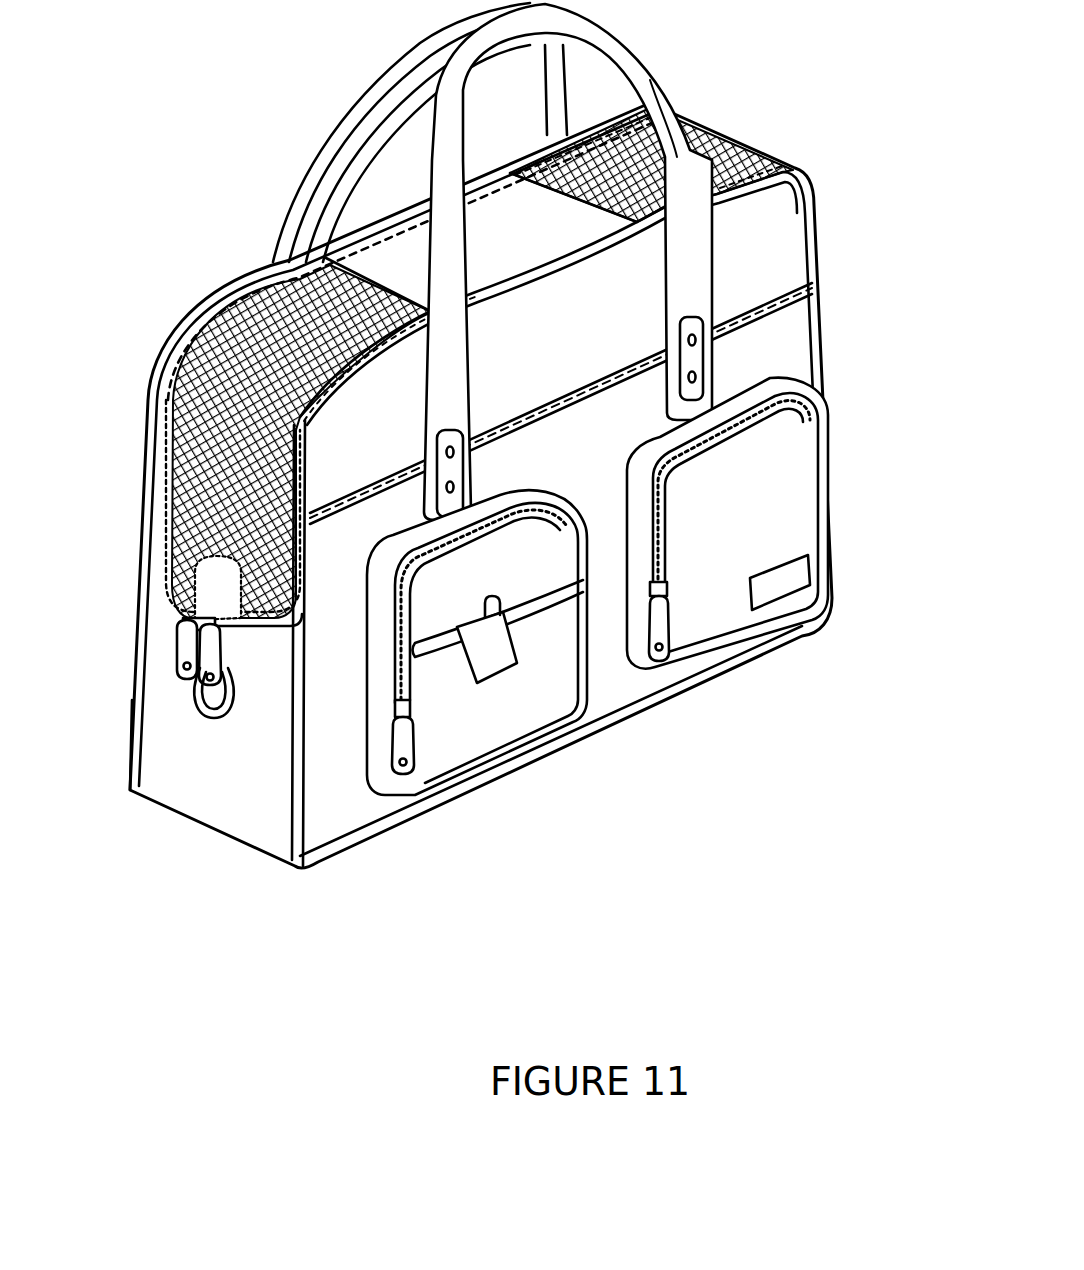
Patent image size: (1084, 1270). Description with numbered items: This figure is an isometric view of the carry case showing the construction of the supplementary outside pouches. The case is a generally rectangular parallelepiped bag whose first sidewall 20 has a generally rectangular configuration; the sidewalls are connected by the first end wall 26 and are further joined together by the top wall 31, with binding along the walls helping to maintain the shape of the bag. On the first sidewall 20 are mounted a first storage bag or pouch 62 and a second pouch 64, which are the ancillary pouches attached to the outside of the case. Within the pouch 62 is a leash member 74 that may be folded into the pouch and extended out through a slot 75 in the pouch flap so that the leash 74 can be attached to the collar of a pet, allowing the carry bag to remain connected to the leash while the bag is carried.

The first sidewall 20 is at (783, 257).
The first end wall 26 is at (243, 803).
The top wall 31 is at (557, 237).
The first storage bag or pouch 62 is at (373, 742).
The second pouch 64 is at (810, 523).
The leash member 74 is at (498, 660).
The slot 75 is at (510, 598).